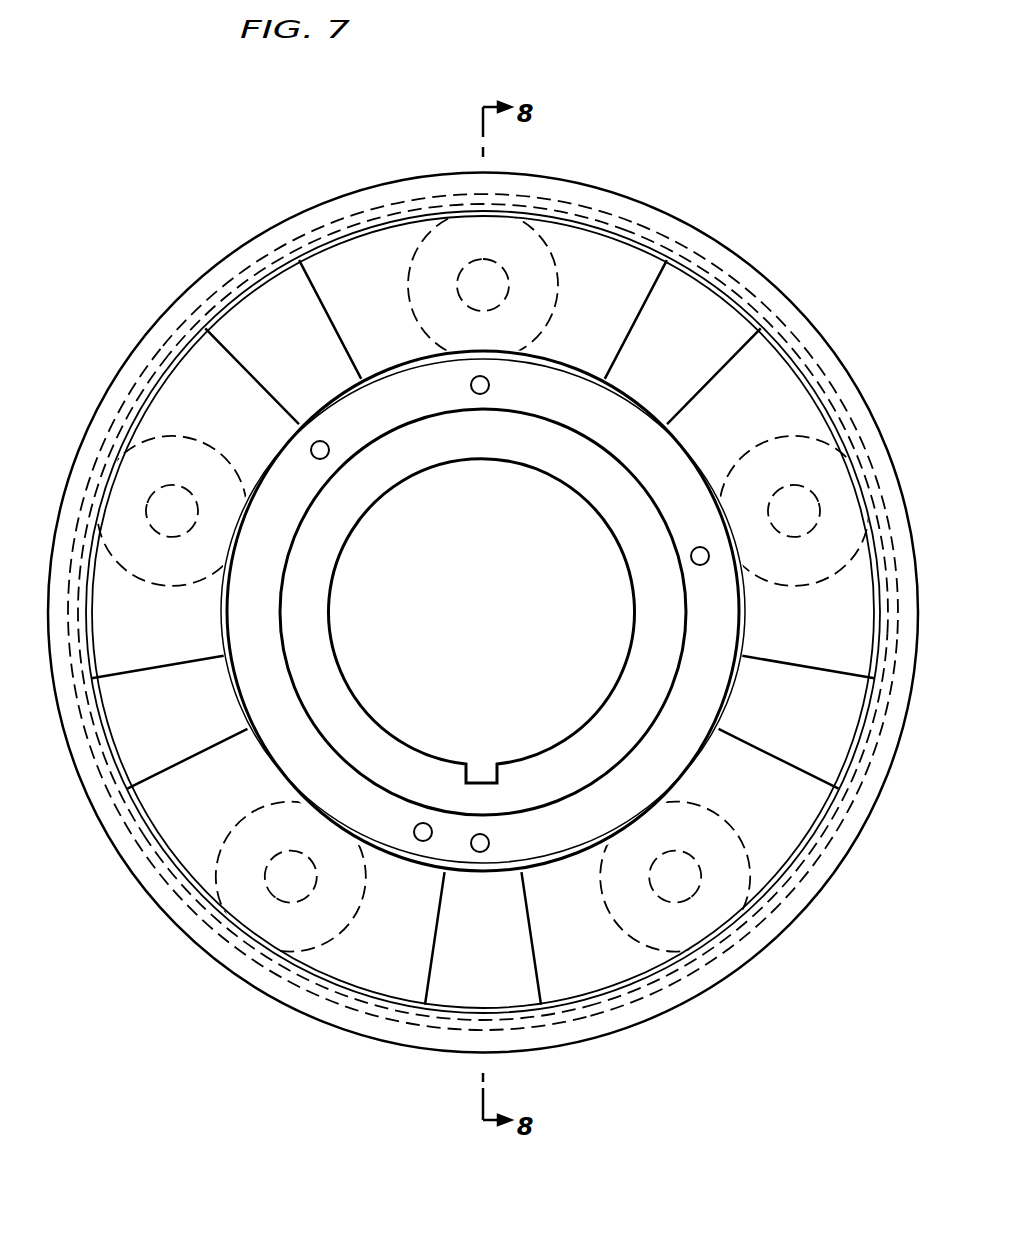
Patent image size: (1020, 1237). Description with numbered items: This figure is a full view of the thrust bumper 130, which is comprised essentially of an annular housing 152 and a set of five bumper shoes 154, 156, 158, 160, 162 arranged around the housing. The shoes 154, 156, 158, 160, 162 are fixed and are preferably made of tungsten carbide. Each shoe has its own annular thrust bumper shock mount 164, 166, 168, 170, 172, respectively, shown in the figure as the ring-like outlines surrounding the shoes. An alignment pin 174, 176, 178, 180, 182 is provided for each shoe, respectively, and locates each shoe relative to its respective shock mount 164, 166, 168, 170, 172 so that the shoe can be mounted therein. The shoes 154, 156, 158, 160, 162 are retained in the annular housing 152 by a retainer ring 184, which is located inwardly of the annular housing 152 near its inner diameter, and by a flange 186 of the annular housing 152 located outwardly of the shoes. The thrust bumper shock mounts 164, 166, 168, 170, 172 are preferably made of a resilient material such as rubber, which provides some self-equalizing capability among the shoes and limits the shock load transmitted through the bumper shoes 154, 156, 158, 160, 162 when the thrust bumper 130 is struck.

The thrust bumper 130 is at (748, 167).
The annular housing 152 is at (743, 263).
The bumper shoe 154 is at (762, 363).
The bumper shoe 156 is at (331, 267).
The bumper shoe 158 is at (203, 360).
The bumper shoe 160 is at (155, 800).
The bumper shoe 162 is at (808, 805).
The thrust bumper shock mount 164 is at (840, 379).
The thrust bumper shock mount 166 is at (412, 262).
The thrust bumper shock mount 168 is at (150, 393).
The thrust bumper shock mount 170 is at (332, 1007).
The thrust bumper shock mount 172 is at (797, 860).
The alignment pin 174 is at (785, 592).
The alignment pin 176 is at (512, 300).
The alignment pin 178 is at (222, 457).
The alignment pin 180 is at (248, 803).
The alignment pin 182 is at (603, 905).
The retainer ring 184 is at (342, 410).
The flange 186 is at (483, 584).